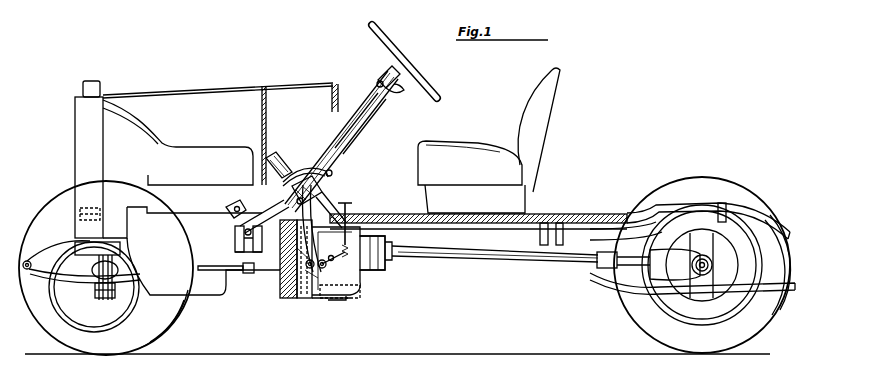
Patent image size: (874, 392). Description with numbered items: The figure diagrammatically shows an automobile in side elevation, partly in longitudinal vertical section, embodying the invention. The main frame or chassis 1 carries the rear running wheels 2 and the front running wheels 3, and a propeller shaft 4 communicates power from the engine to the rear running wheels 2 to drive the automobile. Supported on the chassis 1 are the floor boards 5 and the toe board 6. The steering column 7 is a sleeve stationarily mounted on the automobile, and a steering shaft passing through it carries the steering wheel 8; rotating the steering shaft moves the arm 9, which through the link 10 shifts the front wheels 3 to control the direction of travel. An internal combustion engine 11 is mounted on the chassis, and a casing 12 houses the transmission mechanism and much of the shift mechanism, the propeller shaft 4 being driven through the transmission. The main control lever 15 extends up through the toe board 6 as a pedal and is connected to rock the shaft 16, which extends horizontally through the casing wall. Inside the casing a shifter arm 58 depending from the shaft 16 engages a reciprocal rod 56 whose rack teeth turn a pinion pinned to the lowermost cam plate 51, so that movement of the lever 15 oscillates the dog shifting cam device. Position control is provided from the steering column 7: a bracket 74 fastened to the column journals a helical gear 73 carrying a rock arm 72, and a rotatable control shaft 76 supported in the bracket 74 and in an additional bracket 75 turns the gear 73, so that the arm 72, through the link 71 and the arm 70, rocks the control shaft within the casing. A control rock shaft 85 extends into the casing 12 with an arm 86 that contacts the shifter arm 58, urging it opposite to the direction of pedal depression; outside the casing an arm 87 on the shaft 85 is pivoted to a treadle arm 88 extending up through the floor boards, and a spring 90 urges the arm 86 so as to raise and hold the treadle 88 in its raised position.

The main frame 1 is at (532, 232).
The rear running wheels 2 is at (645, 320).
The front running wheels 3 is at (156, 327).
The propeller shaft 4 is at (526, 258).
The floor boards 5 is at (417, 214).
The toe board 6 is at (271, 158).
The steering column 7 is at (371, 97).
The steering wheel 8 is at (388, 38).
The arm 9 is at (243, 262).
The link 10 is at (212, 270).
The internal combustion engine 11 is at (205, 165).
The casing 12 is at (350, 270).
The main control lever 15 is at (290, 165).
The shaft 16 is at (302, 268).
The lowermost plate 51 is at (362, 286).
The rod 56 is at (338, 301).
The shifter arm 58 is at (309, 299).
The arm 70 is at (358, 242).
The link 71 is at (330, 226).
The rock arm 72 is at (292, 216).
The helical gear 73 is at (320, 195).
The bracket 74 is at (311, 190).
The bracket 75 is at (398, 92).
The control shaft 76 is at (370, 113).
The control rock shaft 85 is at (335, 268).
The arm 86 is at (320, 301).
The arm 87 is at (326, 265).
The treadle arm 88 is at (350, 203).
The spring 90 is at (396, 248).